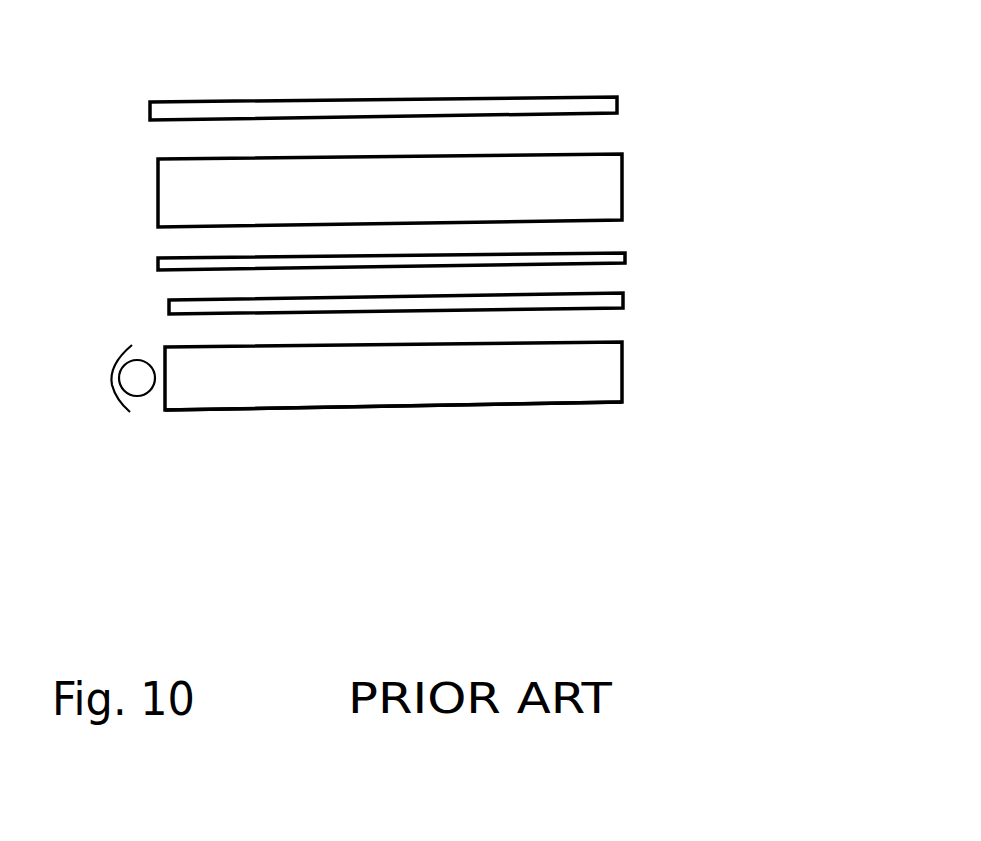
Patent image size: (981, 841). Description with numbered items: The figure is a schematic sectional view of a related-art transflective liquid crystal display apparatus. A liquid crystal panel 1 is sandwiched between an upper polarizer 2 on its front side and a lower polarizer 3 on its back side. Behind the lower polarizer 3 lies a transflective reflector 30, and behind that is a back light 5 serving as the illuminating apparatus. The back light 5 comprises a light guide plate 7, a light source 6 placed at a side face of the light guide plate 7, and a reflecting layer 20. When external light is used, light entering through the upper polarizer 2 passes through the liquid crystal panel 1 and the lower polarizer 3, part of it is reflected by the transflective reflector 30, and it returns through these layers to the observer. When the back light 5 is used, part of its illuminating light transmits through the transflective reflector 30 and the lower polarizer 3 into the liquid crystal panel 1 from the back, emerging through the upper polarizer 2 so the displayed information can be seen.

The liquid crystal panel 1 is at (607, 186).
The upper polarizer 2 is at (617, 98).
The lower polarizer 3 is at (605, 261).
The transflective reflector 30 is at (602, 299).
The light guide plate 7 is at (592, 367).
The reflecting layer 20 is at (477, 405).
The light source 6 is at (133, 387).
The back light 5 is at (350, 423).